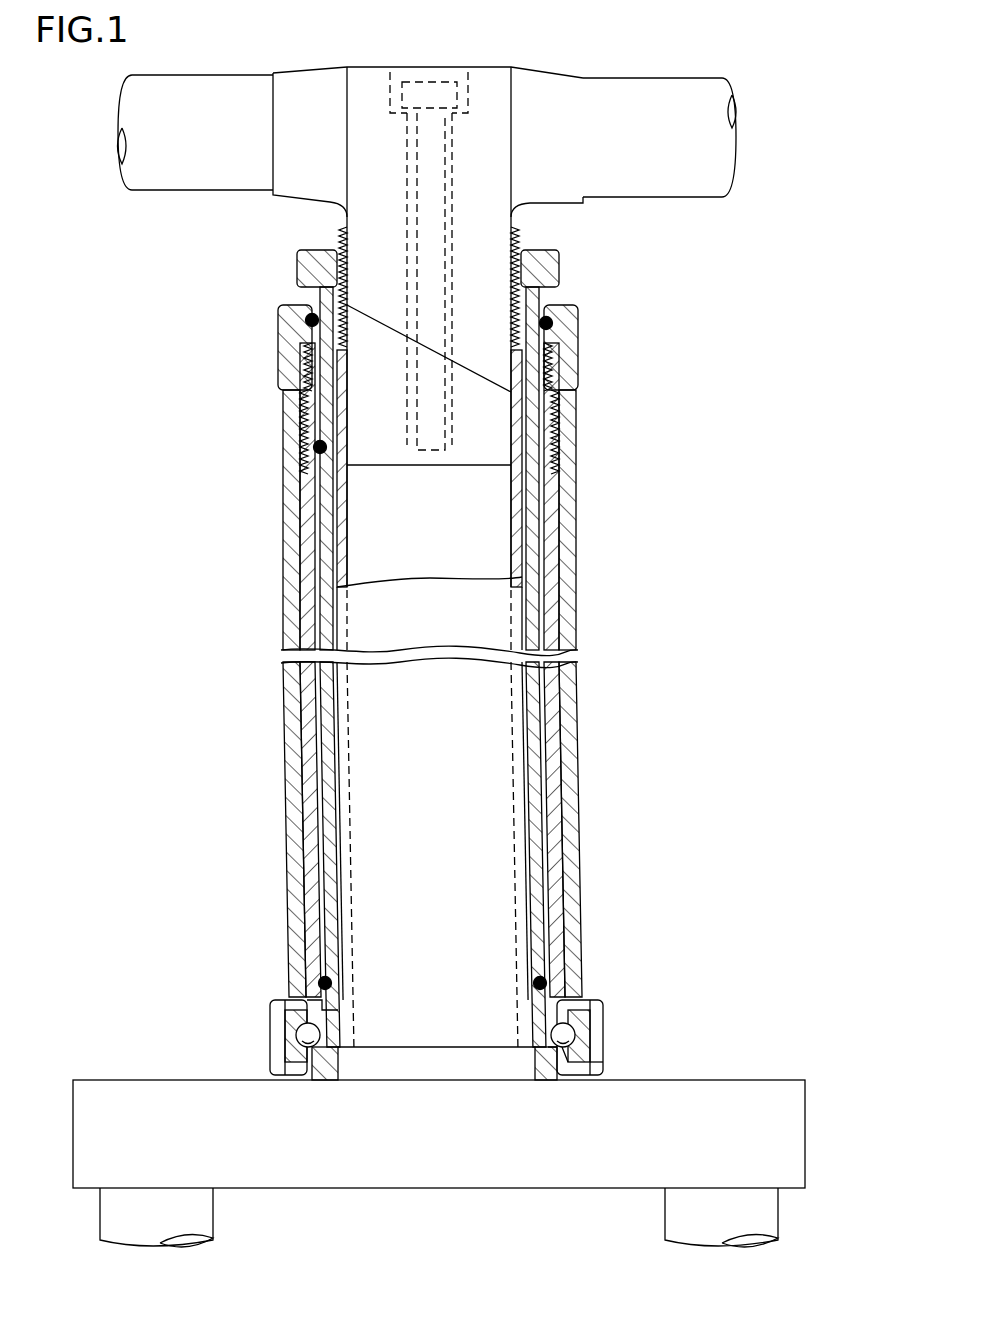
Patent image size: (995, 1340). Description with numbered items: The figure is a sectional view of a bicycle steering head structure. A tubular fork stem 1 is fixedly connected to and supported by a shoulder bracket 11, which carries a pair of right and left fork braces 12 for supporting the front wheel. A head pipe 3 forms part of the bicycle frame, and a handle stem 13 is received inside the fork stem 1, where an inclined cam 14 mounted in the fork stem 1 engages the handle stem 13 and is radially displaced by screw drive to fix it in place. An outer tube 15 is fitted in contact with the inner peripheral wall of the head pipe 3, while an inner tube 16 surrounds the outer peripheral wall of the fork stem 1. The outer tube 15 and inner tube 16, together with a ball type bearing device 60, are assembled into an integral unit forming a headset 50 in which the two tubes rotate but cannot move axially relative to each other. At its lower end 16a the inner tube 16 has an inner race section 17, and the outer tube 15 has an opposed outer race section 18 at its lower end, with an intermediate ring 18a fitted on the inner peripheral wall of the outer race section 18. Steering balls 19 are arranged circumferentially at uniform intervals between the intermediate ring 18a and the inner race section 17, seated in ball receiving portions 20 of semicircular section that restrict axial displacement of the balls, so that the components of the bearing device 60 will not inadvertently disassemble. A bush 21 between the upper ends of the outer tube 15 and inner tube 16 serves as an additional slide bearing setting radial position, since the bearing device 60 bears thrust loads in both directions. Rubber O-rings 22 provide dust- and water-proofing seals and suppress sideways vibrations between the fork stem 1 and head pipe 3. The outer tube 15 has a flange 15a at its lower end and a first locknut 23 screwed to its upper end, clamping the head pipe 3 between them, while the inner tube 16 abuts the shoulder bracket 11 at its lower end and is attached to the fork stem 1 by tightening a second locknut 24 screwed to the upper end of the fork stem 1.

The tubular fork stem 1 is at (521, 232).
The head pipe 3 is at (567, 488).
The shoulder bracket 11 is at (134, 1086).
The fork braces 12 is at (213, 1222).
The handle stem 13 is at (293, 196).
The inclined cam 14 is at (383, 468).
The outer tube 15 is at (551, 540).
The flange 15a is at (289, 997).
The inner tube 16 is at (533, 612).
The lower end of inner tube 16a is at (323, 1078).
The inner race section 17 is at (562, 1052).
The outer race section 18 is at (604, 1054).
The intermediate ring 18a is at (583, 1066).
The steering balls 19 is at (297, 1030).
The ball receiving portions 20 is at (320, 1033).
The bush 21 is at (551, 324).
The rubber O-rings 22 is at (306, 321).
The first locknut 23 is at (578, 354).
The second locknut 24 is at (559, 268).
The headset 50 is at (562, 727).
The ball type bearing device 60 is at (598, 992).